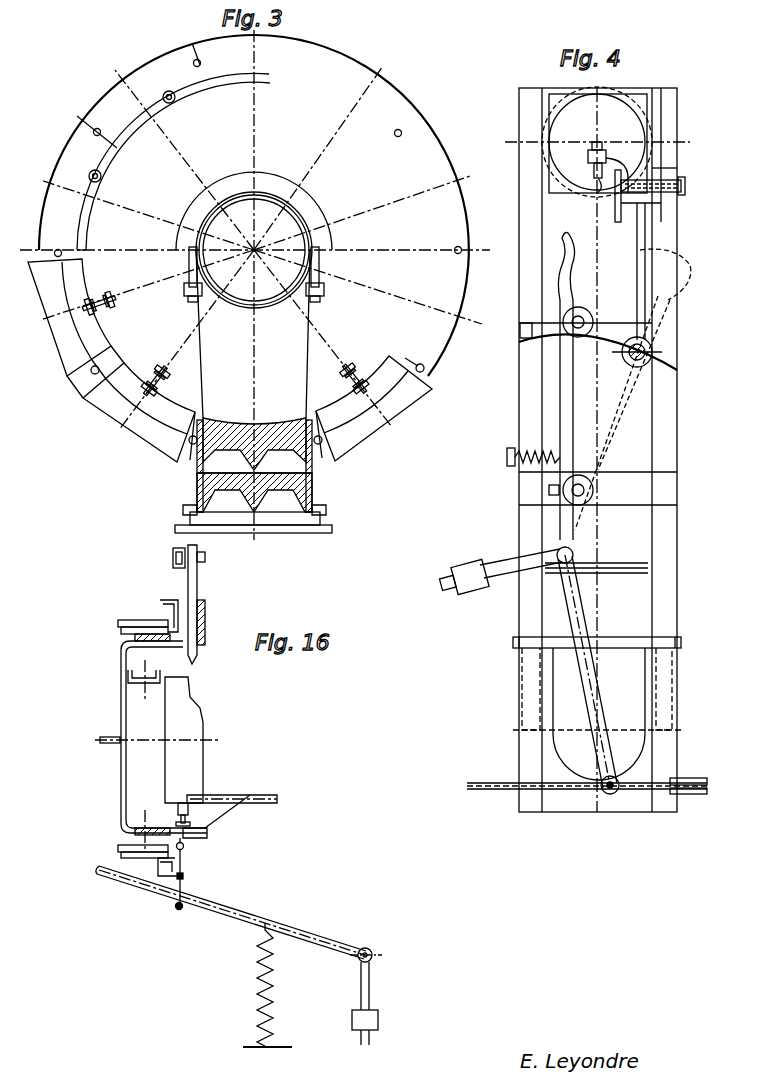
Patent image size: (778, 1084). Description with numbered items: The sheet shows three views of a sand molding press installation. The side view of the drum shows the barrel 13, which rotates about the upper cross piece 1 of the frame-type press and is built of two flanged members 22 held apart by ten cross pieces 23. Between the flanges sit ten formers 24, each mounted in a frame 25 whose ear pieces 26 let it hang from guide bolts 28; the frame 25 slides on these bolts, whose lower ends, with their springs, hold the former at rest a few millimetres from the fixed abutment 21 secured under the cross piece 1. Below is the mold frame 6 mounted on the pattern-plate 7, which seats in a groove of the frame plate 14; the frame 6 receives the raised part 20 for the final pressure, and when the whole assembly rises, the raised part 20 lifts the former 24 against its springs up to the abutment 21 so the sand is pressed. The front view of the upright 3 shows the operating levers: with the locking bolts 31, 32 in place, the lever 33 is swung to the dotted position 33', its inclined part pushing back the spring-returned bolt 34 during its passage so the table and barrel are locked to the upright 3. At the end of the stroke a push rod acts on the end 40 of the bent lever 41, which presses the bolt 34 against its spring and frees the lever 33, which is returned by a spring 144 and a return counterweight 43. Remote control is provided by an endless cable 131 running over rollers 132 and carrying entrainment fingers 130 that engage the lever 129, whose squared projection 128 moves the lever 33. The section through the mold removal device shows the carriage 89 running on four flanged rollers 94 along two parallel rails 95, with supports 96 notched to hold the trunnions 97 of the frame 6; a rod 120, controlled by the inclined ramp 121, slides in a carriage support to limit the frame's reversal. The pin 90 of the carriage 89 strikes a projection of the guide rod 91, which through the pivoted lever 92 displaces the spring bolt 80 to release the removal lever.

In FIG. 3, the upper cross piece 1 is at (296, 219).
In FIG. 4, the upper cross piece 1 is at (627, 104).
In FIG. 4, the upright 3 is at (532, 277).
In FIG. 3, the mold frame 6 is at (190, 497).
In FIG. 3, the pattern-plate 7 is at (330, 507).
In FIG. 3, the drum or barrel 13 is at (428, 182).
In FIG. 3, the frame plate 14 is at (300, 521).
In FIG. 3, the raised part 20 is at (198, 466).
In FIG. 3, the fixed abutment 21 is at (307, 337).
In FIG. 3, the flanged member 22 is at (404, 97).
In FIG. 3, the cross piece 23 is at (92, 176).
In FIG. 3, the former 24 is at (142, 430).
In FIG. 3, the frame 25 is at (206, 420).
In FIG. 3, the ear piece 26 is at (348, 388).
In FIG. 3, the guide bolt 28 is at (352, 368).
In FIG. 4, the locking bolt 31 is at (590, 312).
In FIG. 4, the locking bolt 32 is at (592, 490).
In FIG. 4, the lever 33 is at (525, 386).
In FIG. 4, the lever position 33' is at (654, 389).
In FIG. 4, the bolt 34 is at (655, 352).
In FIG. 4, the end of bent lever 40 is at (572, 178).
In FIG. 4, the bent lever 41 is at (646, 262).
In FIG. 4, the return counterweight 43 is at (468, 593).
In FIG. 16, the spring bolt 80 is at (178, 909).
In FIG. 16, the carriage 89 is at (121, 674).
In FIG. 16, the pin 90 is at (207, 830).
In FIG. 16, the guide rod 91 is at (185, 846).
In FIG. 16, the pivoted lever 92 is at (183, 872).
In FIG. 16, the flanged roller 94 is at (140, 622).
In FIG. 16, the rail 95 is at (170, 600).
In FIG. 16, the support 96 is at (264, 792).
In FIG. 16, the trunnion 97 is at (177, 806).
In FIG. 16, the rod 120 is at (197, 581).
In FIG. 16, the inclined ramp 121 is at (172, 555).
In FIG. 4, the squared projection 128 is at (549, 491).
In FIG. 4, the lever 129 is at (588, 680).
In FIG. 4, the entrainment finger 130 is at (609, 796).
In FIG. 4, the endless cable 131 is at (498, 792).
In FIG. 4, the roller 132 is at (688, 781).
In FIG. 4, the spring 144 is at (522, 450).